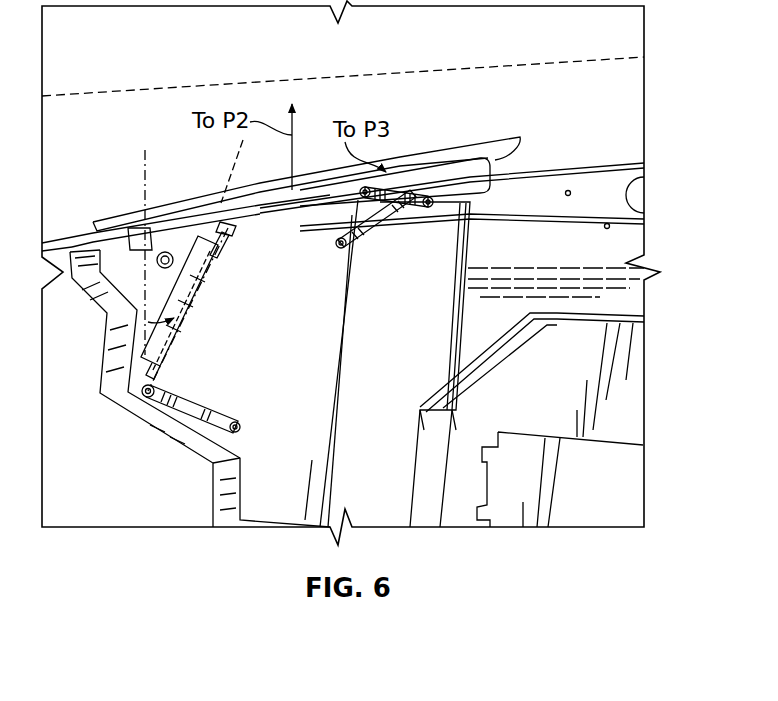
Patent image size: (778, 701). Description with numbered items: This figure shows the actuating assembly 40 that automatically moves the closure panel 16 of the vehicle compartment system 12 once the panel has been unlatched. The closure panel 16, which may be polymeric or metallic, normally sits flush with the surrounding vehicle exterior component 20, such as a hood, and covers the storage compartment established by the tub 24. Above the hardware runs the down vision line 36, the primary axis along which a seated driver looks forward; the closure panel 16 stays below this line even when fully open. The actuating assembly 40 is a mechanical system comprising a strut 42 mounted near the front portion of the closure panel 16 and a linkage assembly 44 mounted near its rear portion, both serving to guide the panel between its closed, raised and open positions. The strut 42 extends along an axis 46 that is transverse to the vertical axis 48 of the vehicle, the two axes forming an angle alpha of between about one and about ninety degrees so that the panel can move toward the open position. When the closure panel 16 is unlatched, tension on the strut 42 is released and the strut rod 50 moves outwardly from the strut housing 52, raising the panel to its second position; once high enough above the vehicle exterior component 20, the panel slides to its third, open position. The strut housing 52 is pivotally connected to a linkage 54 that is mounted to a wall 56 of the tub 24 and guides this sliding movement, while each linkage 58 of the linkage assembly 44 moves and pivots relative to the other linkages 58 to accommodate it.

The compartment system 12 is at (401, 91).
The closure panel 16 is at (446, 153).
The vehicle exterior component 20 is at (570, 165).
The tub 24 is at (482, 343).
The down vision line 36 is at (150, 90).
The actuating assembly 40 is at (222, 281).
The strut 42 is at (205, 312).
The linkage assembly 44 is at (429, 209).
The axis 46 is at (208, 253).
The vertical axis 48 is at (106, 316).
The strut rod 50 is at (226, 230).
The strut housing 52 is at (197, 290).
The linkage 54 is at (193, 410).
The wall 56 is at (366, 444).
The linkage 58 is at (377, 214).